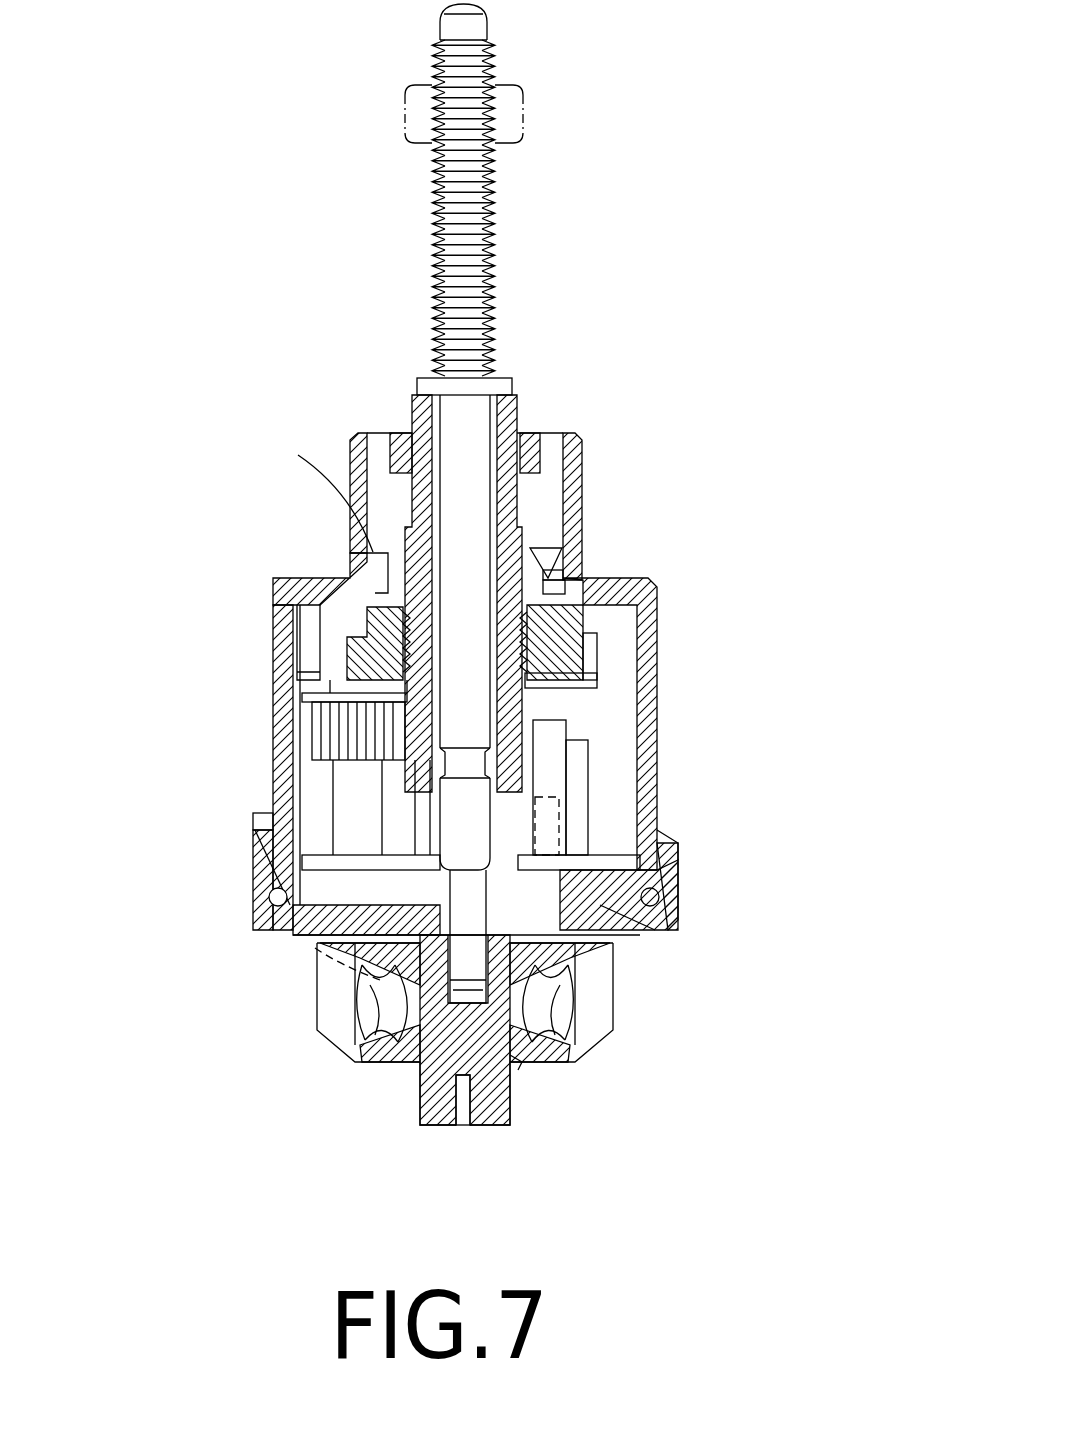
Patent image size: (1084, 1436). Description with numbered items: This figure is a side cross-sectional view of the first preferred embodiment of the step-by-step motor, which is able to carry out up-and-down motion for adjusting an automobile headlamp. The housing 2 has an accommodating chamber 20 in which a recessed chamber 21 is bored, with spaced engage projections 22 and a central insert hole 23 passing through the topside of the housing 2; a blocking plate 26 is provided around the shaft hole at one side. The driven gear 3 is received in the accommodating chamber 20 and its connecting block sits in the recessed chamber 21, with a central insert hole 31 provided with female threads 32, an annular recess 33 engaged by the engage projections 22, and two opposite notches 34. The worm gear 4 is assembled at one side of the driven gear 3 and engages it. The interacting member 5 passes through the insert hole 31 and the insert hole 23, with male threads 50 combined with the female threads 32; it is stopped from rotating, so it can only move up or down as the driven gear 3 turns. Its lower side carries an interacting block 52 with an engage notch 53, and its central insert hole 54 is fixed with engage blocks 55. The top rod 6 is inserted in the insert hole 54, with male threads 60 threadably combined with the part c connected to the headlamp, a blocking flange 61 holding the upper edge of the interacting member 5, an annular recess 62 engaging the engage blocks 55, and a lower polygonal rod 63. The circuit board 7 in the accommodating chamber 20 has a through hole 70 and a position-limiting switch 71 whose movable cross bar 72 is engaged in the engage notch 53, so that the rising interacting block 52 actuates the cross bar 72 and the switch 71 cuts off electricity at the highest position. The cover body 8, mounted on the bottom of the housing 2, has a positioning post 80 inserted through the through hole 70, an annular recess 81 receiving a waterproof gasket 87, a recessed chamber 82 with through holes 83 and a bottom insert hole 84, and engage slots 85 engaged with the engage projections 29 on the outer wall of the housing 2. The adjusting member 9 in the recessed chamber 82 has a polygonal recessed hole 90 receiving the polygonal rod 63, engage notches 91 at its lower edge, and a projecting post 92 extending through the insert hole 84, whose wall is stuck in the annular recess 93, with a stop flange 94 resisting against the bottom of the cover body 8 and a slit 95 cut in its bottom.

The part c is at (515, 100).
The male threads 60 is at (470, 228).
The blocking flange 61 is at (497, 380).
The top rod 6 is at (523, 393).
The interacting member 5 is at (415, 415).
The insert hole 54 is at (518, 415).
The central insert hole 23 is at (527, 455).
The recessed chamber 21 is at (548, 498).
The central insert hole 31 is at (540, 568).
The notches 34 is at (550, 577).
The engage projections 22 is at (572, 581).
The annular recess 33 is at (556, 598).
The female threads 32 is at (598, 642).
The driven gear 3 is at (345, 655).
The housing 2 is at (275, 705).
The blocking plate 26 is at (322, 632).
The worm gear 4 is at (318, 743).
The accommodating chamber 20 is at (318, 795).
The male threads 50 is at (600, 690).
The groove 62 is at (488, 752).
The engage blocks 55 is at (550, 778).
The position-limiting switch 71 is at (552, 777).
The interacting block 52 is at (530, 800).
The positioning post 80 is at (357, 823).
The annular recess 81 is at (278, 890).
The waterproof gasket 87 is at (275, 905).
The circuit board 7 is at (300, 915).
The through hole 70 is at (315, 948).
The polygonal rod 63 is at (470, 912).
The engage projections 29 is at (665, 843).
The engage slots 85 is at (672, 860).
The movable cross bar 72 is at (676, 878).
The cover body 8 is at (680, 905).
The engage notch 53 is at (655, 910).
The adjusting member 9 is at (590, 930).
The through holes 83 is at (600, 1005).
The recessed chamber 82 is at (573, 1047).
The engage notches 91 is at (390, 955).
The stop flange 94 is at (517, 1068).
The polygonal recessed hole 90 is at (417, 960).
The slit 95 is at (465, 1095).
The annular recess 93 is at (437, 1063).
The projecting post 92 is at (488, 1045).
The insert hole 84 is at (523, 1062).